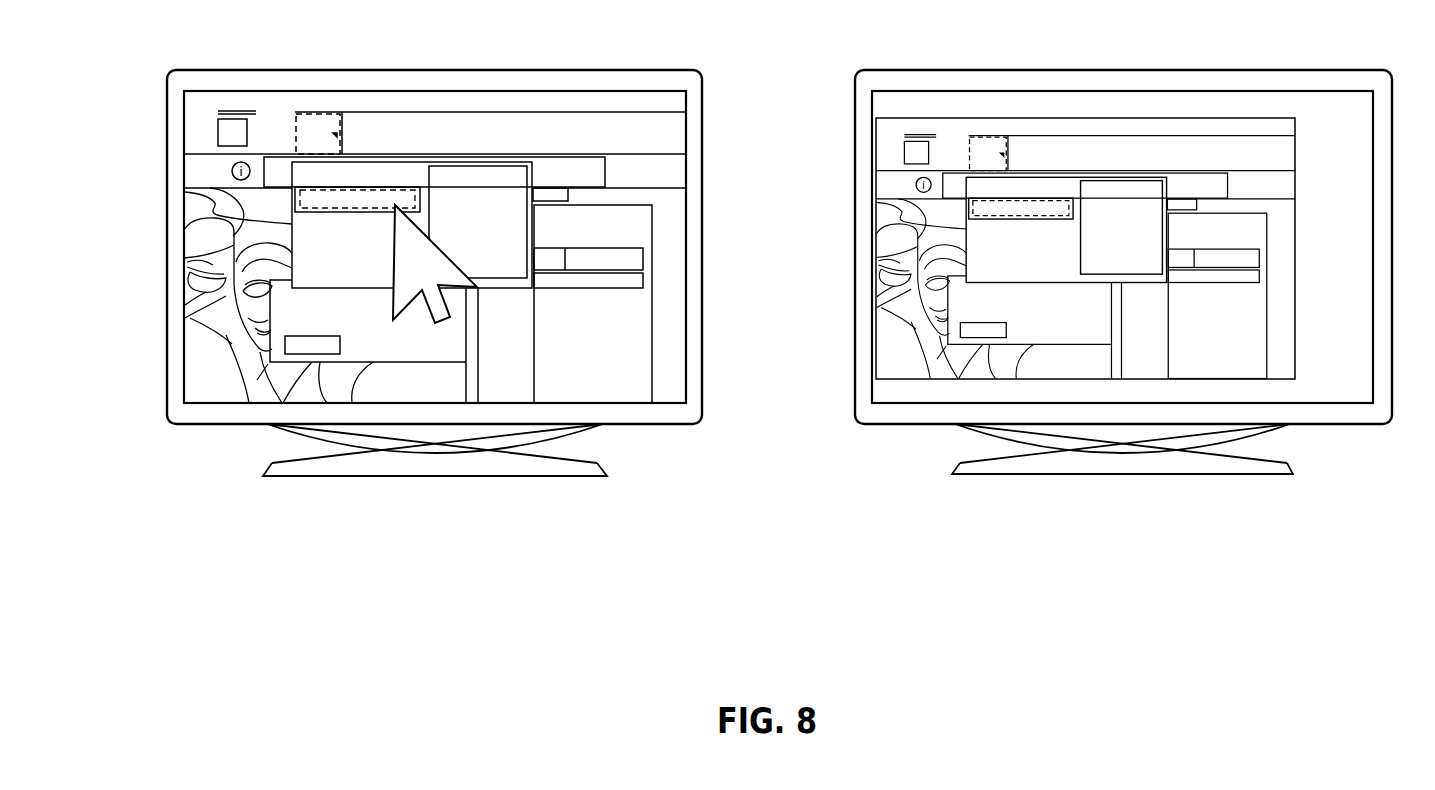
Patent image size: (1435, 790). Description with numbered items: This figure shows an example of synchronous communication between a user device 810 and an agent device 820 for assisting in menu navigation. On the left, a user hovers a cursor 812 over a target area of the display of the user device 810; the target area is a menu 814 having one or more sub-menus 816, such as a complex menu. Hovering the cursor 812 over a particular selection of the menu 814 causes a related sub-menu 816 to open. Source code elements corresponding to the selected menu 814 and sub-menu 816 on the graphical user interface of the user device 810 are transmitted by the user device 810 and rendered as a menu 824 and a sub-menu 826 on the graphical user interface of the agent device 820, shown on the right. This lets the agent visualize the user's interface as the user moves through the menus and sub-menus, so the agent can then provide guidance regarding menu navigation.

The user device 810 is at (330, 70).
The cursor 812 is at (445, 322).
The menu 814 is at (213, 203).
The sub-menu 816 is at (482, 168).
The agent device 820 is at (1072, 70).
The menu 824 is at (883, 208).
The sub-menu 826 is at (1118, 183).